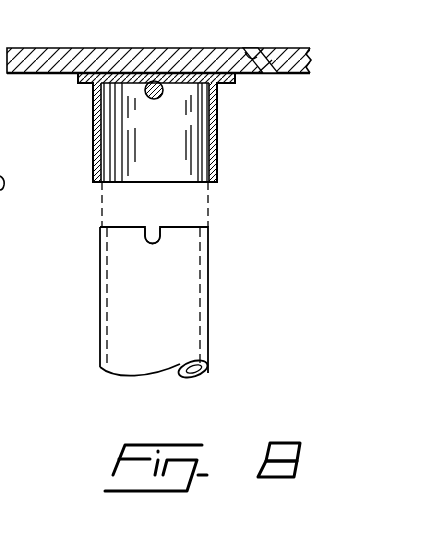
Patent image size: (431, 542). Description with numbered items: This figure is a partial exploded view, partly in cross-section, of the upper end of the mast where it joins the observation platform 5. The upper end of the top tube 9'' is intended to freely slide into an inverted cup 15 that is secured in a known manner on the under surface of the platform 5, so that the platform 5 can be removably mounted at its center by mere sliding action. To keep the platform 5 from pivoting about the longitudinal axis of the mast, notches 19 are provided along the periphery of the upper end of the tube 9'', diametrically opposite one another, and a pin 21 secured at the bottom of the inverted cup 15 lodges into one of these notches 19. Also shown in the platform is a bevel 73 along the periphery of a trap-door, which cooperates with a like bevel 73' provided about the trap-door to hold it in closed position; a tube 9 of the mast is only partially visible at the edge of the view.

The observation platform 5 is at (50, 48).
The bevel 73 is at (317, 37).
The bevel 73' is at (247, 40).
The inverted cup 15 is at (218, 144).
The pin 21 is at (154, 99).
The top tube 9'' is at (176, 281).
The notch 19 is at (157, 232).
The tube (partial, adjacent figure) 9 is at (2, 183).